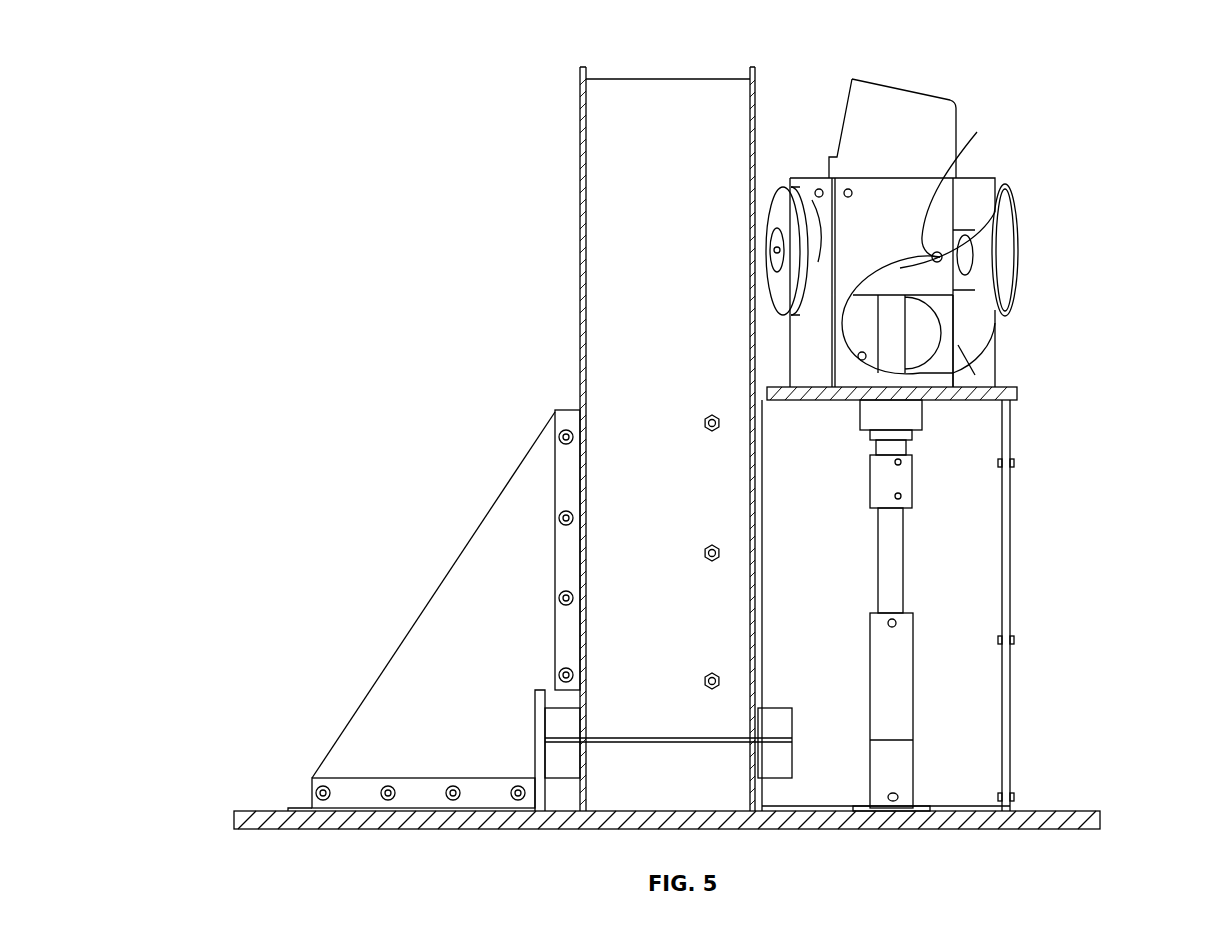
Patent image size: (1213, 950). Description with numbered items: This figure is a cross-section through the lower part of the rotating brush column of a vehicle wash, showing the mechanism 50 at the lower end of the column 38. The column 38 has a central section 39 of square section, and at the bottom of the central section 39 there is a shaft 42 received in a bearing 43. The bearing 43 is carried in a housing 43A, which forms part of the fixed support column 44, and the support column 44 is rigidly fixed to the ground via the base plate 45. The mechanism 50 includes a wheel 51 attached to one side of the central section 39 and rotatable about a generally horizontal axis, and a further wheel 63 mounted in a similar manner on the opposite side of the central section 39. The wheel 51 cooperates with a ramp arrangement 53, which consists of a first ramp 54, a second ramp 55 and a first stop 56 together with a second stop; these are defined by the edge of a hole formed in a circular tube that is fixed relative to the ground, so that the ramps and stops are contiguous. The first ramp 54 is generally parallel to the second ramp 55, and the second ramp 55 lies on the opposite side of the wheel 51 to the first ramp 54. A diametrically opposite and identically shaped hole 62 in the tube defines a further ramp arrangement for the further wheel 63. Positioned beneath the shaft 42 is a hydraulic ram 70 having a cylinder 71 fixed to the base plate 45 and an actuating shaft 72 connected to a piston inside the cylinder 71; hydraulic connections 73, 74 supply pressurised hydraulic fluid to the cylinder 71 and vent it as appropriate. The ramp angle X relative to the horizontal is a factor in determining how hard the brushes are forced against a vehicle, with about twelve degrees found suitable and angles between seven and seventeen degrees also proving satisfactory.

The column 38 is at (870, 93).
The central section 39 is at (920, 113).
The shaft 42 is at (885, 320).
The bearing 43 is at (912, 410).
The housing 43A is at (918, 427).
The support column 44 is at (612, 138).
The base plate 45 is at (275, 810).
The mechanism 50 is at (1118, 218).
The wheel 51 is at (1008, 205).
The ramp arrangement 53 is at (1062, 322).
The first ramp 54 is at (960, 353).
The second ramp 55 is at (959, 183).
The first stop 56 is at (862, 360).
The hole 62 is at (812, 200).
The further wheel 63 is at (785, 283).
The hydraulic ram 70 is at (897, 715).
The cylinder 71 is at (903, 764).
The actuating shaft 72 is at (898, 600).
The hydraulic connection 73 is at (898, 802).
The hydraulic connection 74 is at (888, 624).
The ramp angle X is at (960, 372).